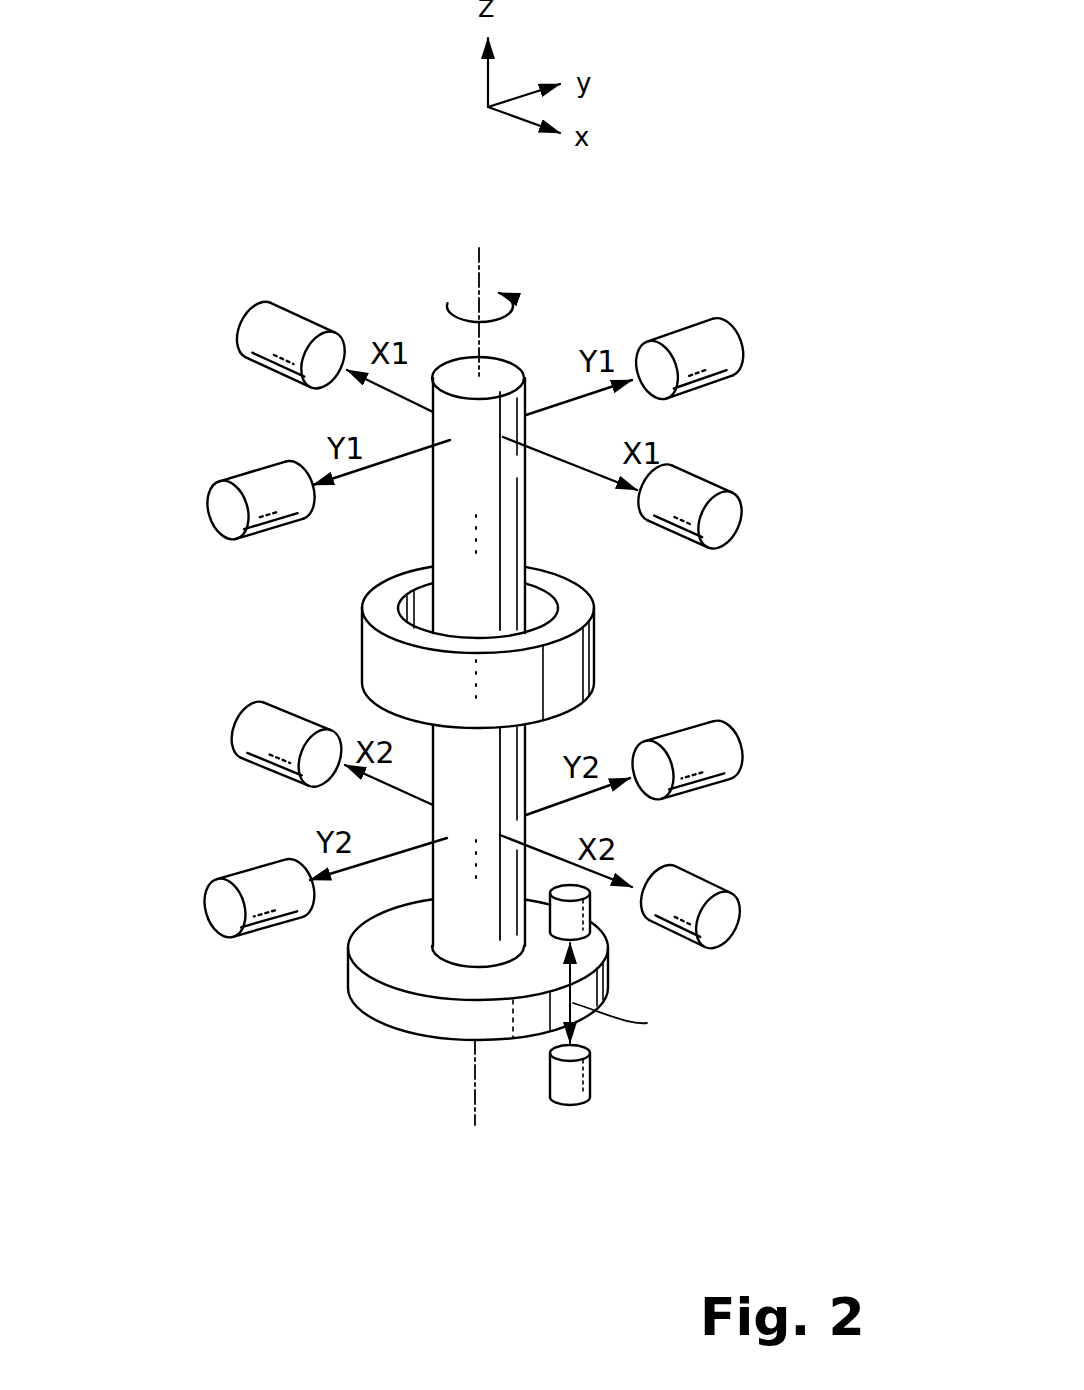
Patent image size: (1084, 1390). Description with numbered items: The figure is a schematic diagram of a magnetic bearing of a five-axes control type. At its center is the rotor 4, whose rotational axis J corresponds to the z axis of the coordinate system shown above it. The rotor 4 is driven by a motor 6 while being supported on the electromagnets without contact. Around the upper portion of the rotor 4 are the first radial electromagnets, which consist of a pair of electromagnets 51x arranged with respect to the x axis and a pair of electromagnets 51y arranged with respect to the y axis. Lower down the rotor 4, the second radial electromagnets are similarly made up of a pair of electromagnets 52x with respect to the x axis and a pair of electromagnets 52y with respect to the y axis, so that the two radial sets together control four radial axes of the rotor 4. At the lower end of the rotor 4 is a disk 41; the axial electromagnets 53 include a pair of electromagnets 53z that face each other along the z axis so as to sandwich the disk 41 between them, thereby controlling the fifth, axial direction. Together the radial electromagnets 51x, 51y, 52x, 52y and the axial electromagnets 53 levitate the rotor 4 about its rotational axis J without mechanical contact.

The rotational axis J is at (482, 280).
The rotor 4 is at (502, 382).
The motor 6 is at (583, 652).
The disk 41 is at (412, 1012).
The electromagnets with respect to the x axis 51x is at (302, 328).
The electromagnets with respect to the y axis 51y is at (247, 483).
The electromagnets with respect to the x axis 52x is at (283, 720).
The electromagnets with respect to the y axis 52y is at (232, 888).
The electromagnets 53z is at (583, 913).
The axial electromagnets 53 is at (654, 995).